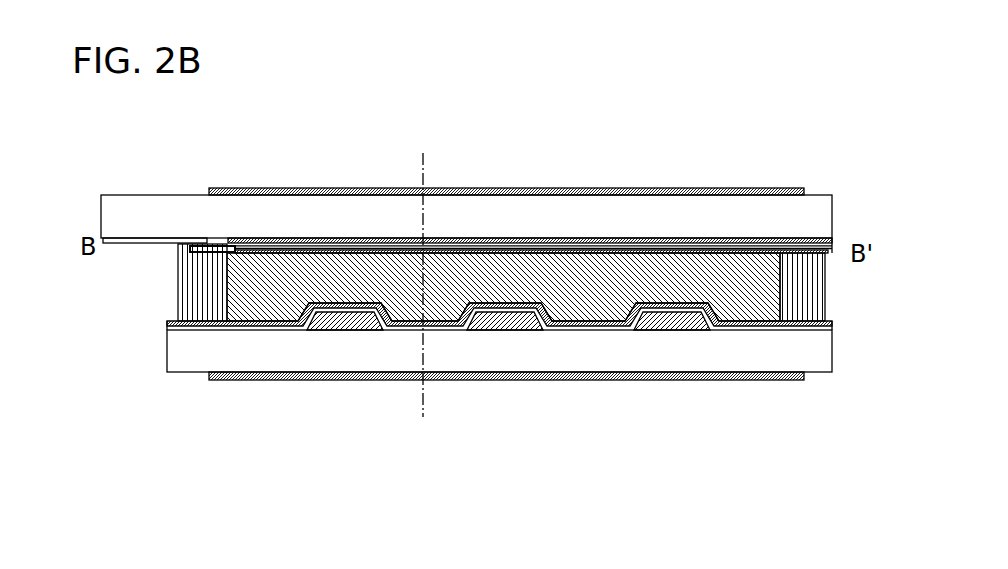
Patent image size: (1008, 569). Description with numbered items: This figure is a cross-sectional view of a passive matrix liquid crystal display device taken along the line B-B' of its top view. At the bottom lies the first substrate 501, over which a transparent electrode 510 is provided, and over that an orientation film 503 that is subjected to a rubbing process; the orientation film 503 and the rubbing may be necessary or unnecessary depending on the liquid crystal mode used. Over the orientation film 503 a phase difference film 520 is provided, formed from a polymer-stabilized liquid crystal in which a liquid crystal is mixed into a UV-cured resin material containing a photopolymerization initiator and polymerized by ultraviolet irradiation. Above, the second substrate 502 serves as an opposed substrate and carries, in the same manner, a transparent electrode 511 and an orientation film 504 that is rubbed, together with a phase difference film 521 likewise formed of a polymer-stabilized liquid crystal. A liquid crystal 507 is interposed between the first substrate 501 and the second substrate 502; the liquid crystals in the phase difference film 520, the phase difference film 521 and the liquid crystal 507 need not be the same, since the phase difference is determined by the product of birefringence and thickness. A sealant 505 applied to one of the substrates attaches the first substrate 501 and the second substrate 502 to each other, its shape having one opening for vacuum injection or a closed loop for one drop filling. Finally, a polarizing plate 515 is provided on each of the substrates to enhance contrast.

The first substrate 501 is at (718, 352).
The second substrate 502 is at (158, 225).
The orientation film 503 is at (553, 330).
The orientation film 504 is at (533, 246).
The sealant 505 is at (203, 305).
The liquid crystal 507 is at (258, 302).
The transparent electrode 510 is at (492, 322).
The transparent electrode 511 is at (325, 238).
The polarizing plate 515 is at (495, 188).
The phase difference film 520 is at (405, 330).
The phase difference film 521 is at (693, 253).